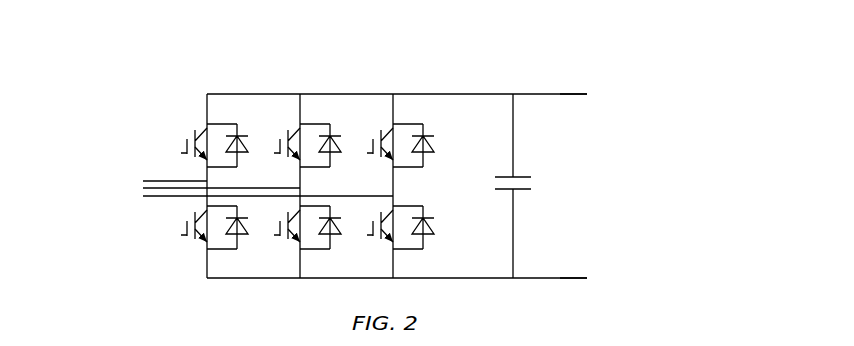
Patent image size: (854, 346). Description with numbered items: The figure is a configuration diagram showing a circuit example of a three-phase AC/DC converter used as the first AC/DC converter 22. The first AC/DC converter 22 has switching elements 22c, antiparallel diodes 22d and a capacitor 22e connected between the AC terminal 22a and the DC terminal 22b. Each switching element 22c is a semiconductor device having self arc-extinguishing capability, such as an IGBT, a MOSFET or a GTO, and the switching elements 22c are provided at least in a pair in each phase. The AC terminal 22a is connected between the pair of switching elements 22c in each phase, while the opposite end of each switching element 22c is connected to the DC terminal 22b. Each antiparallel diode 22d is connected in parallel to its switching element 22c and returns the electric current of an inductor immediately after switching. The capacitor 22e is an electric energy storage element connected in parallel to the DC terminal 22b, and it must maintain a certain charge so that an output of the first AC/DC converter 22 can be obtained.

The first AC/DC converter 22 is at (467, 28).
The AC terminal 22a is at (139, 186).
The DC terminal 22b is at (678, 186).
The switching element 22c is at (191, 132).
The antiparallel diode 22d is at (280, 90).
The capacitor 22e is at (524, 176).